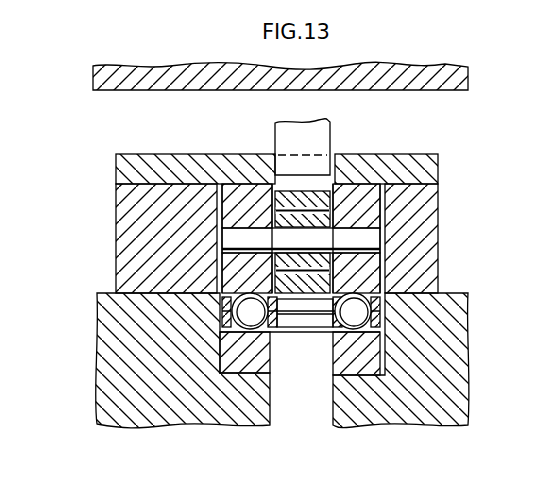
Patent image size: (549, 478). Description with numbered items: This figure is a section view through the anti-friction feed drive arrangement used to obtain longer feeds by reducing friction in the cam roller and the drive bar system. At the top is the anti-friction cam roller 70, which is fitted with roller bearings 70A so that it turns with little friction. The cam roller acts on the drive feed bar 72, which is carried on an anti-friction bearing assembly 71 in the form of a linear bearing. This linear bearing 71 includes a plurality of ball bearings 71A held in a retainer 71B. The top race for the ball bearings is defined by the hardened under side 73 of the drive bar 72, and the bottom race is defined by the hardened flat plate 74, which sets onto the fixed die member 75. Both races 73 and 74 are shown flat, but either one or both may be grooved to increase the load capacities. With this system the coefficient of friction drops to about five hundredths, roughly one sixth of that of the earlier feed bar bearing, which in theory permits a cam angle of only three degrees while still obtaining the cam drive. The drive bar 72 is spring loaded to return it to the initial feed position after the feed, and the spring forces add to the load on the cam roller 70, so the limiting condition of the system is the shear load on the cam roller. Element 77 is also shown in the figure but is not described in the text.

The anti-friction cam roller 70 is at (313, 197).
The roller bearings 70A is at (333, 197).
The anti-friction bearing assembly 71 is at (276, 337).
The ball bearings 71A is at (383, 290).
The retainer 71B is at (313, 307).
The drive feed bar 72 is at (368, 207).
The hardened under side 73 is at (236, 291).
The hardened flat plate 74 is at (368, 330).
The fixed die member 75 is at (110, 338).
The plunger 77 is at (276, 144).